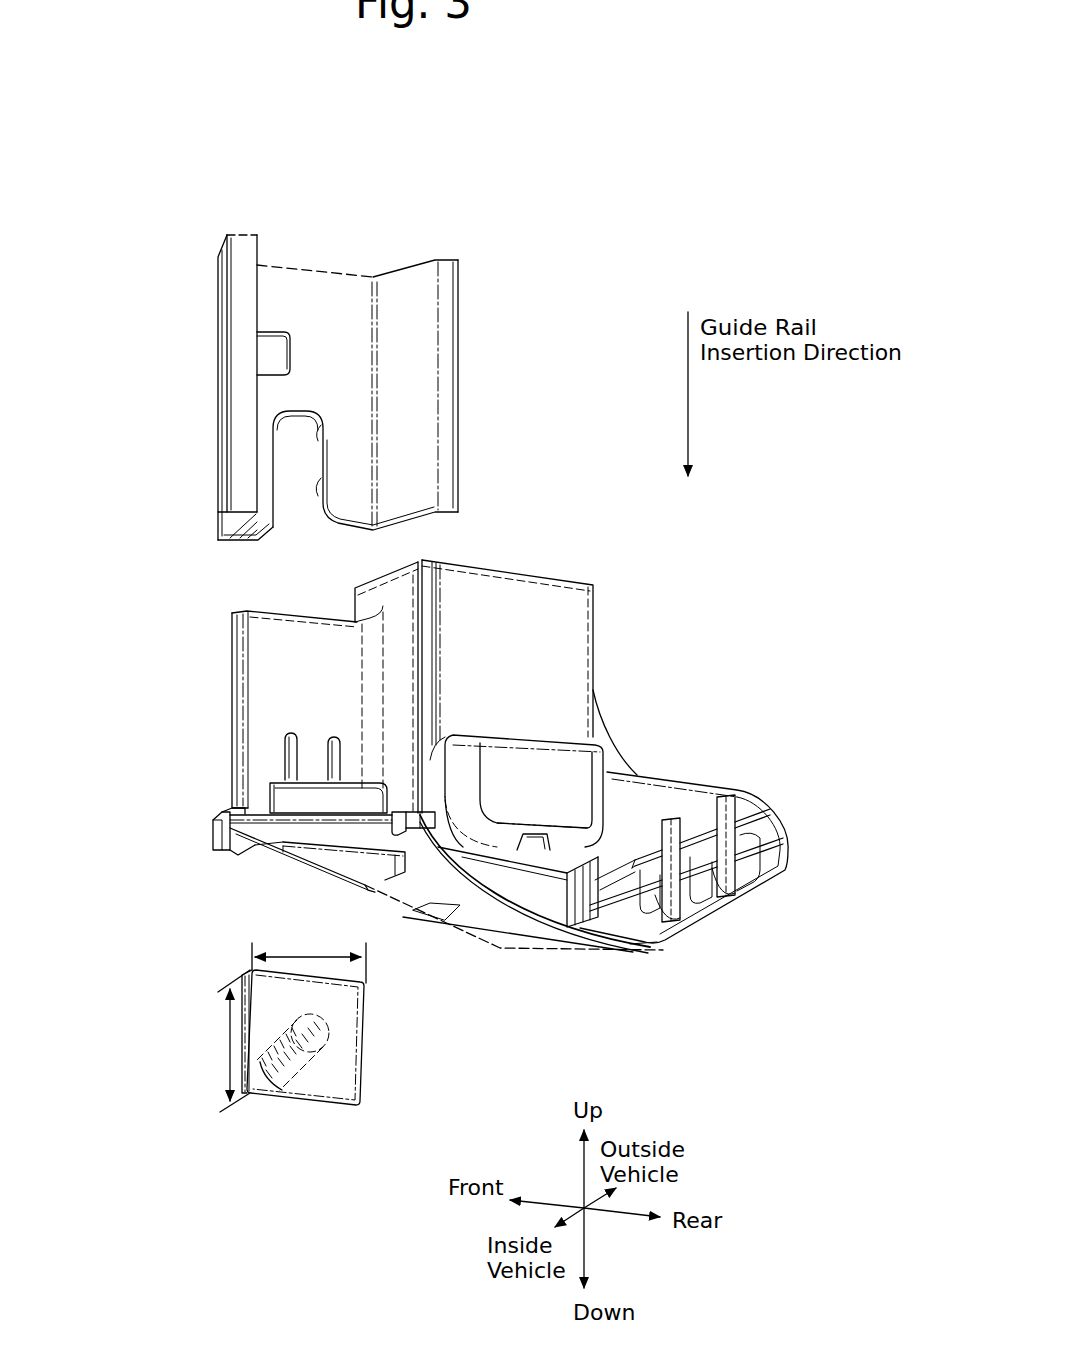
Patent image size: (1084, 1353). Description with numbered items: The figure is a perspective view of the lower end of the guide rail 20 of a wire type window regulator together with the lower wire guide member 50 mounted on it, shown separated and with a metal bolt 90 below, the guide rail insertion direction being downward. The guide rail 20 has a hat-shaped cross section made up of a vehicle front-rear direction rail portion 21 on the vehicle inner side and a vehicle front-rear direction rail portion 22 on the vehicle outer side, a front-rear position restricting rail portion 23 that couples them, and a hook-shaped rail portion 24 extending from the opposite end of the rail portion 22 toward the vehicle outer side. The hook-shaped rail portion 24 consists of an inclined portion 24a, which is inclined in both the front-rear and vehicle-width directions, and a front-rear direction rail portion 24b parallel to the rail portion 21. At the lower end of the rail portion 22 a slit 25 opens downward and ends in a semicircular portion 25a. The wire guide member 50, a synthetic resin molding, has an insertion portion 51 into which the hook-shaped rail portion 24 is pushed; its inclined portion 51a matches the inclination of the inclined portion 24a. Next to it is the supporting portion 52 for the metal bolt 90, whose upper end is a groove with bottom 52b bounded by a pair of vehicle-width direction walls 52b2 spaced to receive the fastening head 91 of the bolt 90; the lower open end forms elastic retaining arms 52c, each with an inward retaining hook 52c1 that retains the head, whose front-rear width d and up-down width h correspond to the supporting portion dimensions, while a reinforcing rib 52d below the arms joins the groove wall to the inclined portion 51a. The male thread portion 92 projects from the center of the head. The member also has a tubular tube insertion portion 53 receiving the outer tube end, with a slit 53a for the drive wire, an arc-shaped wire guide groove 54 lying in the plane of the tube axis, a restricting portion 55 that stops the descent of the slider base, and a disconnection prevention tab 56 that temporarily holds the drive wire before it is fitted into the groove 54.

The guide rail 20 is at (492, 252).
The vehicle front-rear direction rail portion 21 is at (250, 256).
The vehicle front-rear direction rail portion 22 is at (320, 290).
The front-rear position restricting rail portion 23 is at (215, 525).
The hook-shaped rail portion 24 is at (560, 295).
The inclined portion 24a is at (418, 352).
The front-rear direction rail portion 24b is at (445, 370).
The slit 25 is at (323, 494).
The semicircular portion 25a is at (323, 443).
The wire guide member 50 is at (666, 664).
The insertion portion 51 is at (455, 600).
The inclined portion 51a is at (395, 723).
The supporting portion 52 is at (258, 642).
The groove with bottom 52b is at (290, 853).
The vehicle-width direction wall 52b2 is at (237, 682).
The elastic retaining arm 52c is at (308, 757).
The retaining hook 52c1 is at (290, 773).
The reinforcing rib 52d is at (330, 830).
The tubular tube insertion portion 53 is at (732, 798).
The slit 53a is at (660, 945).
The wire guide groove 54 is at (490, 910).
The restricting portion 55 is at (597, 745).
The disconnection prevention tab 56 is at (410, 840).
The metal bolt 90 is at (349, 1134).
The fastening head 91 is at (325, 1080).
The male thread portion 92 is at (280, 1077).